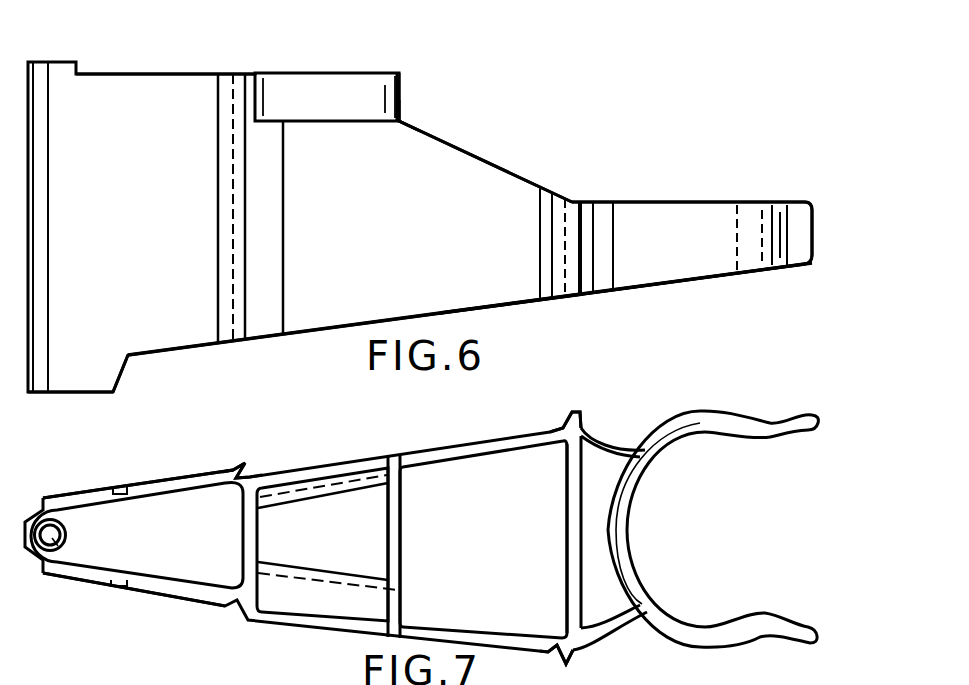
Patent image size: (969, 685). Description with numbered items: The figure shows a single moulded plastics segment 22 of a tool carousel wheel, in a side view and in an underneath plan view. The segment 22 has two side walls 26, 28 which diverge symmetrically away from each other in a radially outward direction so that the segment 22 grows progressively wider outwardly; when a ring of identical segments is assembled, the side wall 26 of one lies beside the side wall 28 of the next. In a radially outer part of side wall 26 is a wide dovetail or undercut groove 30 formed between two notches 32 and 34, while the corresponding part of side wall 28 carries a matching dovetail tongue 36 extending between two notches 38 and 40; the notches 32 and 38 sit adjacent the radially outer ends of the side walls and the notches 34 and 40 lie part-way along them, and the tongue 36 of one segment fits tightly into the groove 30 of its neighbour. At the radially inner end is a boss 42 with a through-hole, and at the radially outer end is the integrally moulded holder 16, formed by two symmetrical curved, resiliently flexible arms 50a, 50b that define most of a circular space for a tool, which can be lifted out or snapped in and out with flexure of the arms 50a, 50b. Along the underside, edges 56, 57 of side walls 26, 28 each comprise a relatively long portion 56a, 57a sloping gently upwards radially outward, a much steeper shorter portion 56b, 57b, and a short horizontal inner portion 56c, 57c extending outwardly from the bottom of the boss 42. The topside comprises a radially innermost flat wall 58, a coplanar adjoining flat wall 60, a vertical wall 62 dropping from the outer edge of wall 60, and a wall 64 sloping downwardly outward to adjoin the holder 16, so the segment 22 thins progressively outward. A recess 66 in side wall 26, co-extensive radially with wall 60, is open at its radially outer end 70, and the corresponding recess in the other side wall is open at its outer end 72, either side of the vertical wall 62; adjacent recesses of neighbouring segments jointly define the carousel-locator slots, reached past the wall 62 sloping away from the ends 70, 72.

In FIG. 6, the holder 16 is at (657, 202).
In FIG. 7, the holder 16 is at (737, 424).
In FIG. 6, the segment 22 is at (315, 379).
In FIG. 7, the segment 22 is at (120, 639).
In FIG. 7, the side wall 26 is at (324, 521).
In FIG. 7, the side wall 28 is at (329, 557).
In FIG. 7, the dovetail groove 30 is at (350, 462).
In FIG. 7, the notch 32 is at (556, 424).
In FIG. 7, the notch 34 is at (248, 473).
In FIG. 7, the dovetail tongue 36 is at (338, 630).
In FIG. 7, the notch 38 is at (565, 652).
In FIG. 7, the notch 40 is at (73, 557).
In FIG. 6, the boss 42 is at (60, 62).
In FIG. 7, the boss 42 is at (72, 531).
In FIG. 7, the arm 50a is at (697, 440).
In FIG. 7, the arm 50b is at (720, 627).
In FIG. 6, the underside edge 56 is at (470, 309).
In FIG. 6, the underside edge 57 is at (396, 316).
In FIG. 6, the underside edge portion 56a is at (533, 318).
In FIG. 7, the underside edge portion 56a is at (445, 450).
In FIG. 6, the underside edge portion 57a is at (505, 302).
In FIG. 6, the underside edge portion 56b is at (187, 373).
In FIG. 7, the underside edge portion 56b is at (120, 488).
In FIG. 6, the underside edge portion 57b is at (127, 360).
In FIG. 7, the underside edge portion 57b is at (113, 581).
In FIG. 6, the inner edge portion 56c is at (109, 409).
In FIG. 7, the inner edge portion 56c is at (78, 496).
In FIG. 6, the inner edge portion 57c is at (72, 395).
In FIG. 7, the inner edge portion 57c is at (77, 574).
In FIG. 6, the flat wall 58 is at (140, 74).
In FIG. 6, the flat wall 60 is at (334, 73).
In FIG. 6, the vertical wall 62 is at (478, 103).
In FIG. 6, the sloping wall 64 is at (487, 163).
In FIG. 6, the recess 66 is at (371, 91).
In FIG. 6, the radially outer end 70 is at (478, 103).
In FIG. 6, the radially outer end 72 is at (400, 108).